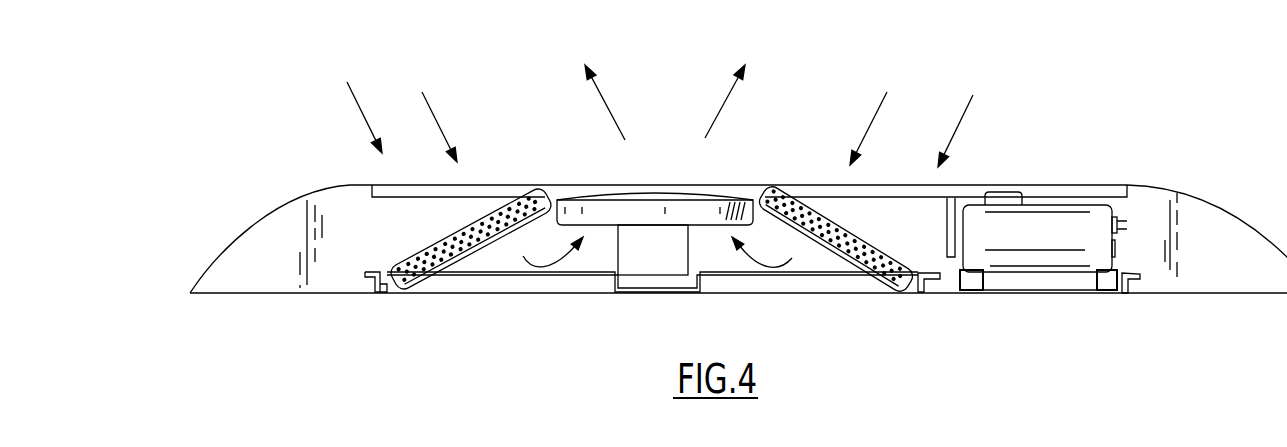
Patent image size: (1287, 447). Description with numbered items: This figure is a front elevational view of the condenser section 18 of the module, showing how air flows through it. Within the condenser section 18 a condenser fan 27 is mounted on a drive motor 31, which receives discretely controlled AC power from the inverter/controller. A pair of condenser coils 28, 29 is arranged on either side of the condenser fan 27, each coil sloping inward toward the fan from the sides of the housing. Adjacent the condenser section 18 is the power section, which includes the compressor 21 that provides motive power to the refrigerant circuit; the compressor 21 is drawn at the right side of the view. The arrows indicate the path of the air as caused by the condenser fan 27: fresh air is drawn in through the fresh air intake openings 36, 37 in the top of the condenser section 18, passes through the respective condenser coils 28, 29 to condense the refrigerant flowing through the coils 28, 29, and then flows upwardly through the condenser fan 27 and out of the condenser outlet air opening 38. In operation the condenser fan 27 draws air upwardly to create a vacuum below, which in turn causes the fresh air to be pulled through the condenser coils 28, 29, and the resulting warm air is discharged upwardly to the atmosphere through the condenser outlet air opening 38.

The condenser section 18 is at (306, 318).
The compressor 21 is at (1055, 233).
The condenser fan 27 is at (610, 212).
The condenser coil 28 is at (840, 257).
The condenser coil 29 is at (437, 256).
The drive motor 31 is at (660, 262).
The fresh air intake opening 36 is at (885, 175).
The fresh air intake opening 37 is at (478, 176).
The condenser outlet air opening 38 is at (710, 178).